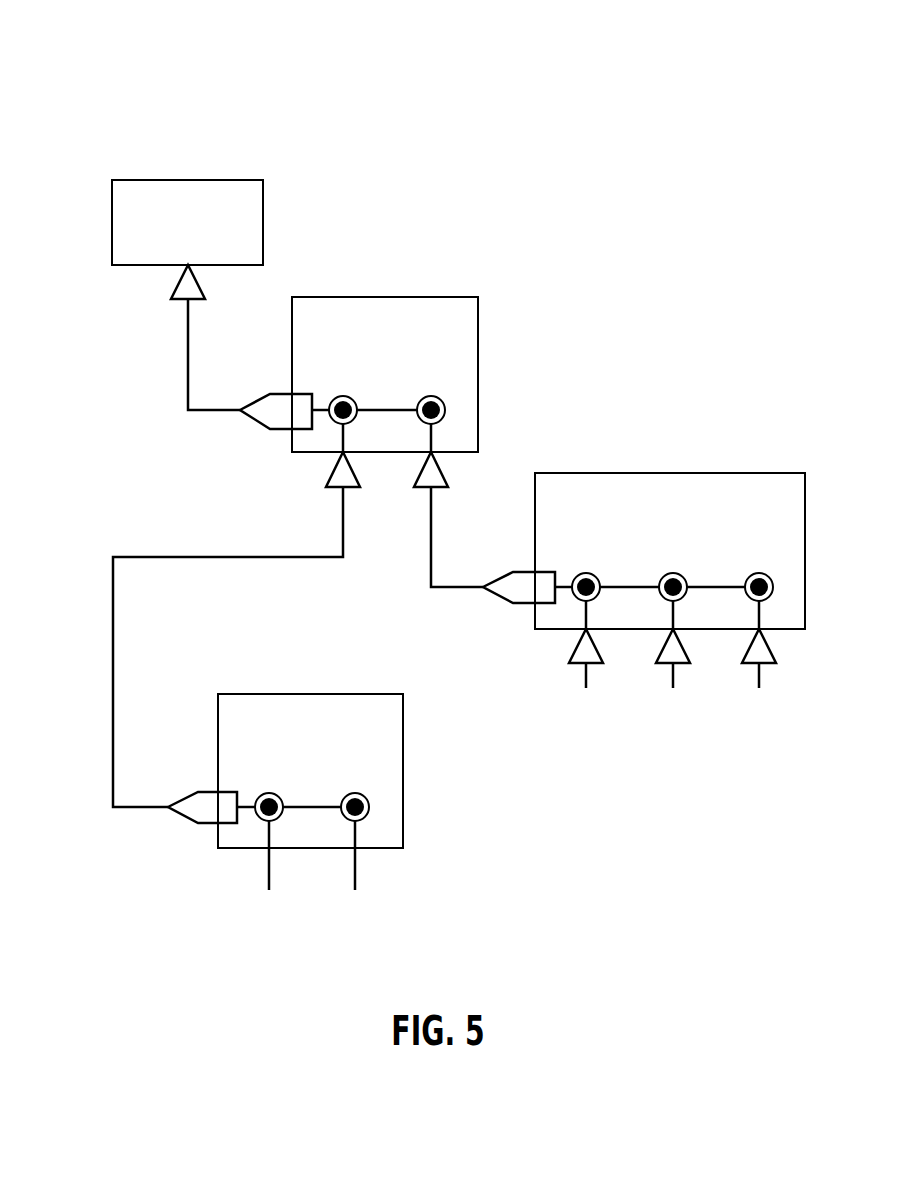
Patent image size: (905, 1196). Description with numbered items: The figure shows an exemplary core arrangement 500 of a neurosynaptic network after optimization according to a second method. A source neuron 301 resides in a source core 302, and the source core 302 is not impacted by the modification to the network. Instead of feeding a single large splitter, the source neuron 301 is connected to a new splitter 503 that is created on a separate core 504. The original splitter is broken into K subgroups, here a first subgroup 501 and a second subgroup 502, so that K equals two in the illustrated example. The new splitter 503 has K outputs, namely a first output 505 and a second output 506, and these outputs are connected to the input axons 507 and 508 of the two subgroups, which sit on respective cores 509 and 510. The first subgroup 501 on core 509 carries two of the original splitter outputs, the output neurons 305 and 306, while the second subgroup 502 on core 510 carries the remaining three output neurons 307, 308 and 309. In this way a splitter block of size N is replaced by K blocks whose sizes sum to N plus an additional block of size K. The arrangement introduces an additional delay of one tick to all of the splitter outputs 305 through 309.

The neurosynaptic network 500 is at (434, 468).
The source core 302 is at (236, 180).
The source neuron 301 is at (178, 286).
The core 504 is at (410, 297).
The new splitter 503 is at (448, 387).
The output of new splitter 505 is at (333, 468).
The output of new splitter 506 is at (445, 474).
The input axon 507 is at (183, 820).
The input axon 508 is at (500, 600).
The core 509 is at (333, 692).
The subgroup 501 is at (373, 784).
The core 510 is at (652, 473).
The subgroup 502 is at (773, 559).
The output neuron 305 is at (269, 876).
The output neuron 306 is at (355, 876).
The output neuron 307 is at (586, 666).
The output neuron 308 is at (673, 666).
The output neuron 309 is at (759, 666).